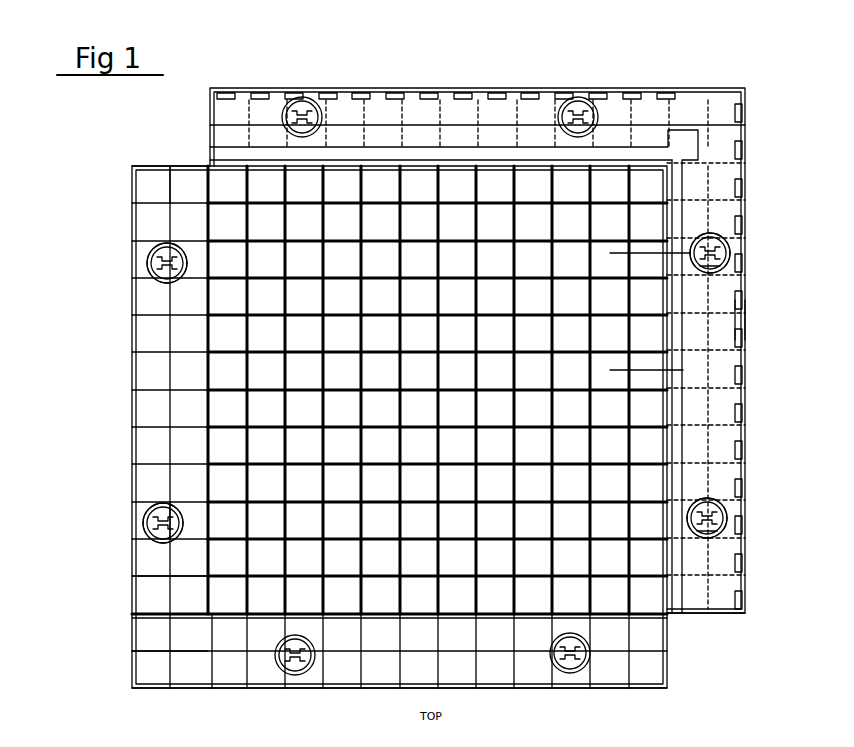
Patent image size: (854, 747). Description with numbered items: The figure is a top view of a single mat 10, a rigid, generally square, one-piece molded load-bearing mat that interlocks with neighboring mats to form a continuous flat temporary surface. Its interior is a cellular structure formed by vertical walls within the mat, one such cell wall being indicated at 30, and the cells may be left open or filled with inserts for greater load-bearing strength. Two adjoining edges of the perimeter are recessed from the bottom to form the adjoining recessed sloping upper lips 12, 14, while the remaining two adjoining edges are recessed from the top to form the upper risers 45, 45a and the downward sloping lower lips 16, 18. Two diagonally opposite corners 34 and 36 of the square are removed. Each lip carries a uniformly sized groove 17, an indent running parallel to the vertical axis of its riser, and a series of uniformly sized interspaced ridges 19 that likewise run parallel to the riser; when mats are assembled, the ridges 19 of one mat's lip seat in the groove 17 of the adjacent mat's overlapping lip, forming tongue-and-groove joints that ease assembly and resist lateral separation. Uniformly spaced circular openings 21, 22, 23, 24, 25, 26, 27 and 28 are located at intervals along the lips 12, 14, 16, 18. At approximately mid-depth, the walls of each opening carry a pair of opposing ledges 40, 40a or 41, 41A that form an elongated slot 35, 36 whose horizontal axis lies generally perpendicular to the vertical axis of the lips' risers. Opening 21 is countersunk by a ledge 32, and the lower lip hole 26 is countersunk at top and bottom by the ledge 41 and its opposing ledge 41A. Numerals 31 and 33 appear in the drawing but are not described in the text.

The mat 10 is at (130, 375).
The upper lip 12 is at (130, 452).
The upper lip 14 is at (338, 690).
The lower lip 16 is at (489, 88).
The groove 17 is at (417, 147).
The lower lip 18 is at (733, 320).
The ridges 19 is at (252, 88).
The opening 21 is at (145, 525).
The opening 22 is at (145, 265).
The opening 23 is at (303, 117).
The opening 24 is at (577, 117).
The opening 25 is at (707, 247).
The opening 26 is at (707, 518).
The opening 27 is at (570, 655).
The opening 28 is at (295, 660).
The cell wall 30 is at (162, 610).
The bottom frame rail 31 is at (165, 620).
The ledge 32 is at (163, 633).
The lower grid row 33 is at (167, 654).
The corner 34 is at (158, 142).
The slot 35 is at (172, 258).
The corner 36 is at (717, 260).
The ledge 40 is at (152, 247).
The ledge 40a is at (150, 282).
The ledge 41 is at (713, 232).
The ledge 41A is at (718, 268).
The upper riser 45 is at (672, 193).
The upper riser 45a is at (370, 160).